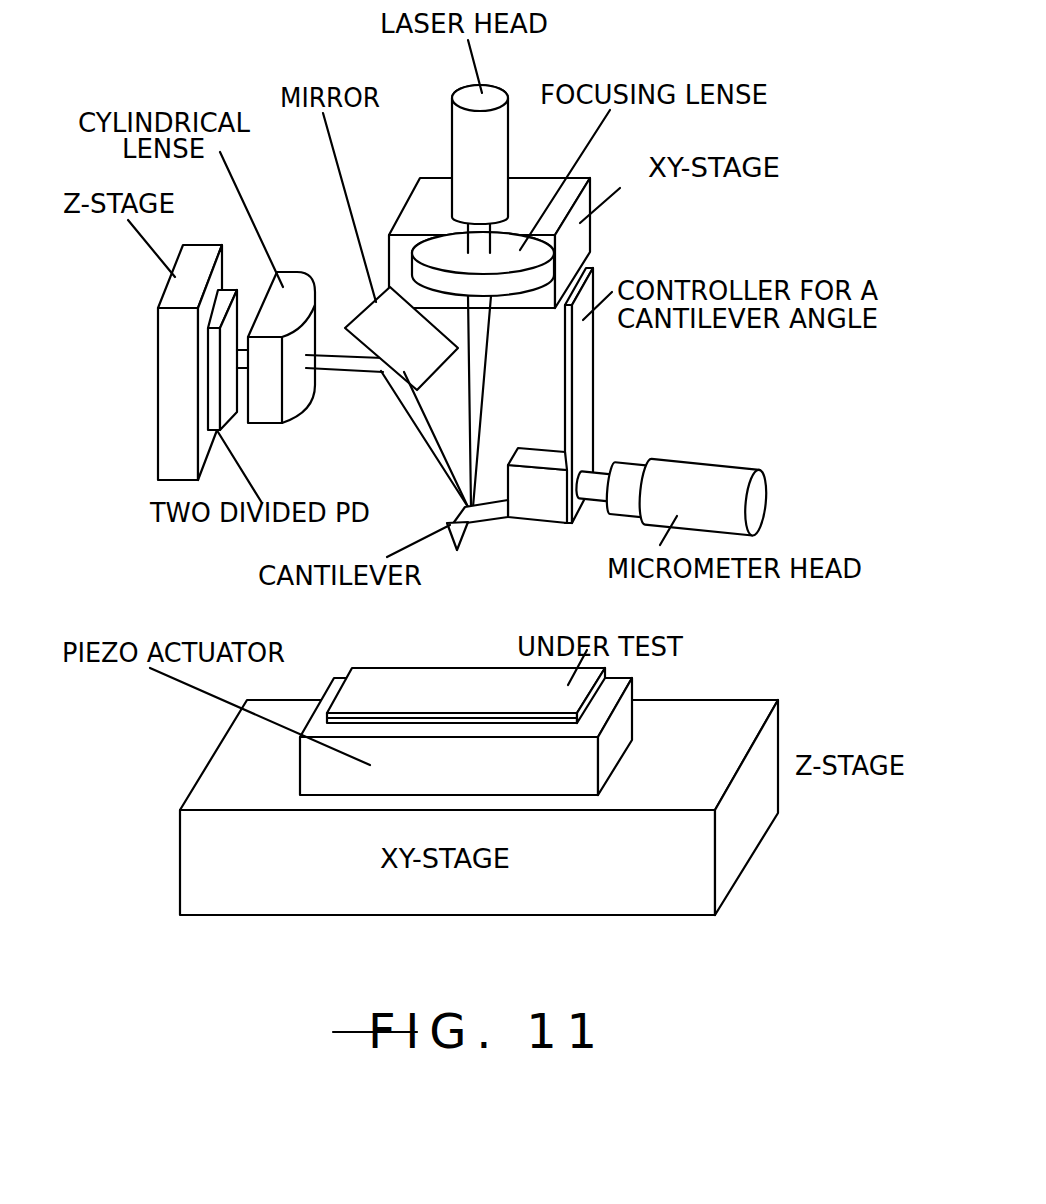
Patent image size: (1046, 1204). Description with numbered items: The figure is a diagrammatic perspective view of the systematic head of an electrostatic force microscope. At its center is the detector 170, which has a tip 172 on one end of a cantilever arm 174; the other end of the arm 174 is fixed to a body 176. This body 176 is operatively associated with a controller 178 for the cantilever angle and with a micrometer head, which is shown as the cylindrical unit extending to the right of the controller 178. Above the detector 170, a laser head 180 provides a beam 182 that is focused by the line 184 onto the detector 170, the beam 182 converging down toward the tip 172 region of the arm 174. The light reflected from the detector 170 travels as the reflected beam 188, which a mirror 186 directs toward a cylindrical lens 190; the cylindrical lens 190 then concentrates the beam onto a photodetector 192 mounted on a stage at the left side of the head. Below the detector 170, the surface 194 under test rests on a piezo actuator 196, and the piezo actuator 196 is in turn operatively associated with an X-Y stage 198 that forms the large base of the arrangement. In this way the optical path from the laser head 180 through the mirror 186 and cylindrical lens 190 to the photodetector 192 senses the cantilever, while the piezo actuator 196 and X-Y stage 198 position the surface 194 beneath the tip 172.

The detector 170 is at (504, 505).
The tip 172 is at (457, 530).
The cantilever arm 174 is at (488, 513).
The body 176 is at (532, 452).
The controller for the cantilever angle 178 is at (580, 425).
The laser head 180 is at (463, 140).
The beam 182 is at (493, 253).
The line 184 is at (438, 252).
The mirror 186 is at (356, 305).
The reflected beam 188 is at (338, 372).
The cylindrical lens 190 is at (288, 403).
The photodetector 192 is at (225, 420).
The surface under test 194 is at (400, 682).
The piezo actuator 196 is at (315, 773).
The X-Y stage 198 is at (200, 895).